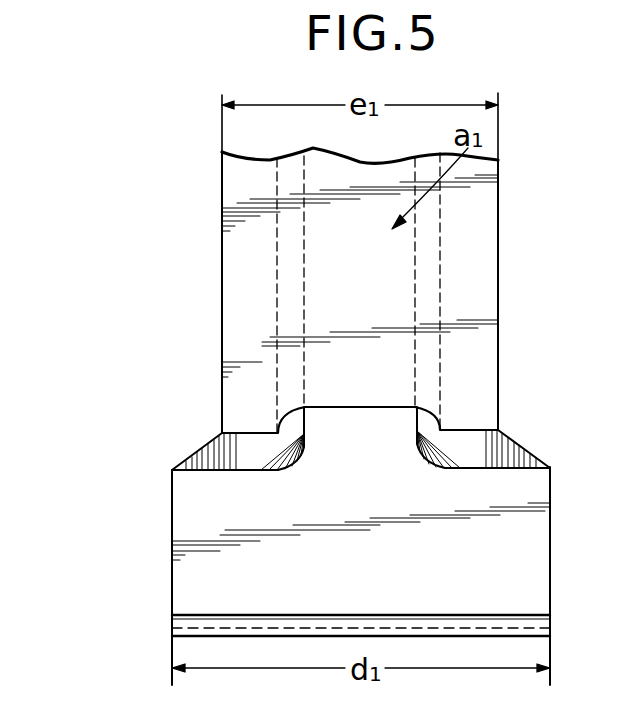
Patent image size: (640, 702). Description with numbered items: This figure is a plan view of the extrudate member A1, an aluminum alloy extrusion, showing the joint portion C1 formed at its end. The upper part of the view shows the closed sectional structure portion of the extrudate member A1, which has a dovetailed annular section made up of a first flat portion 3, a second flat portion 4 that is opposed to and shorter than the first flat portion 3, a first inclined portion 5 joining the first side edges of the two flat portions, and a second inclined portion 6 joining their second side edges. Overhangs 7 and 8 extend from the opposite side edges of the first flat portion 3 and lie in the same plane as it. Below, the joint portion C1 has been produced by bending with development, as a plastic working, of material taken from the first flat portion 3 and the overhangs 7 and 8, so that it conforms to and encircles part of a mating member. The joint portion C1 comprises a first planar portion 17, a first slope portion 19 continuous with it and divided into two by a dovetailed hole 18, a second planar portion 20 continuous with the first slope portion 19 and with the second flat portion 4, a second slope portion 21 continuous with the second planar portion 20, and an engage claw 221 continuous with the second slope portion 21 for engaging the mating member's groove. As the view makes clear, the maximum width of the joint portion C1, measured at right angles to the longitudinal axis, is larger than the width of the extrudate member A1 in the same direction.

The first flat portion 3 is at (387, 390).
The second flat portion 4 is at (343, 423).
The first inclined portion 5 is at (284, 280).
The second inclined portion 6 is at (440, 275).
The overhang 7 is at (222, 192).
The overhang 8 is at (486, 226).
The first planar portion 17 is at (475, 407).
The dovetailed hole 18 is at (338, 312).
The first slope portion 19 is at (473, 460).
The second planar portion 20 is at (187, 588).
The second slope portion 21 is at (173, 635).
The engage claw 221 is at (420, 612).
The extrudate member A1 is at (212, 344).
The joint portion C1 is at (555, 543).